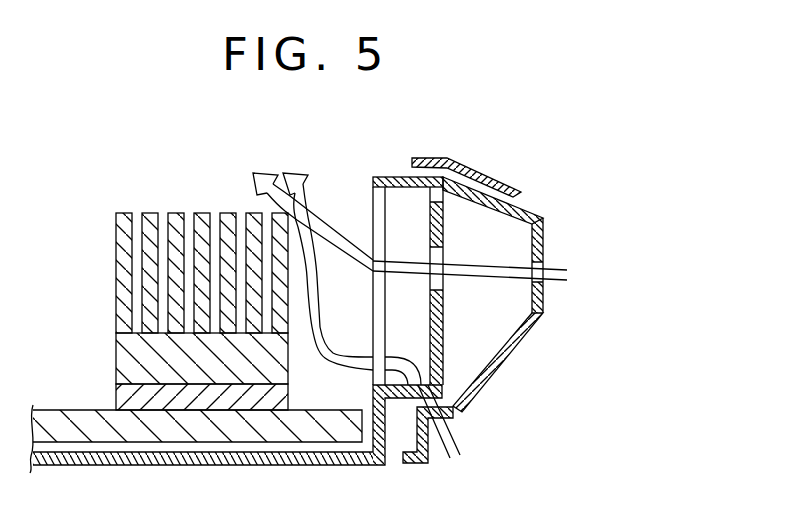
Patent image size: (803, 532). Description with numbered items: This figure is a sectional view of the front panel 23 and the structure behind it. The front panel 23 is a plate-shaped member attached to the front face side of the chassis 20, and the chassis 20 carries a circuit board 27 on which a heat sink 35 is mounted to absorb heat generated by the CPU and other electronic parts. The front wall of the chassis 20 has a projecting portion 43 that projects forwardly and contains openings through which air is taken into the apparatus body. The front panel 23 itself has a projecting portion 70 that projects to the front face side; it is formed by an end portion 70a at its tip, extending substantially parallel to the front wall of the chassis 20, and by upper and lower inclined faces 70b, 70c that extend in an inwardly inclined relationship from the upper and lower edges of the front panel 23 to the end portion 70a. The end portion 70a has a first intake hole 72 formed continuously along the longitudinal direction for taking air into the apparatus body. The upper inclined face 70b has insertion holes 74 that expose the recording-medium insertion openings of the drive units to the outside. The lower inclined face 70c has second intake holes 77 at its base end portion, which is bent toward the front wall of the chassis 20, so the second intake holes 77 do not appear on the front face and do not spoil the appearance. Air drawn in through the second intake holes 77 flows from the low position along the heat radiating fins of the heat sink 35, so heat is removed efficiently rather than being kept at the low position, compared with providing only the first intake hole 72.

The chassis 20 is at (218, 465).
The front panel 23 is at (297, 131).
The circuit board 27 is at (73, 432).
The heat sink 35 is at (122, 213).
The projecting portion 43 is at (393, 177).
The projecting portion 70 is at (557, 310).
The end portion 70a is at (545, 220).
The upper inclined face 70b is at (523, 200).
The lower inclined face 70c is at (523, 347).
The first intake hole 72 is at (545, 267).
The insertion holes 74 is at (497, 182).
The second intake holes 77 is at (450, 418).